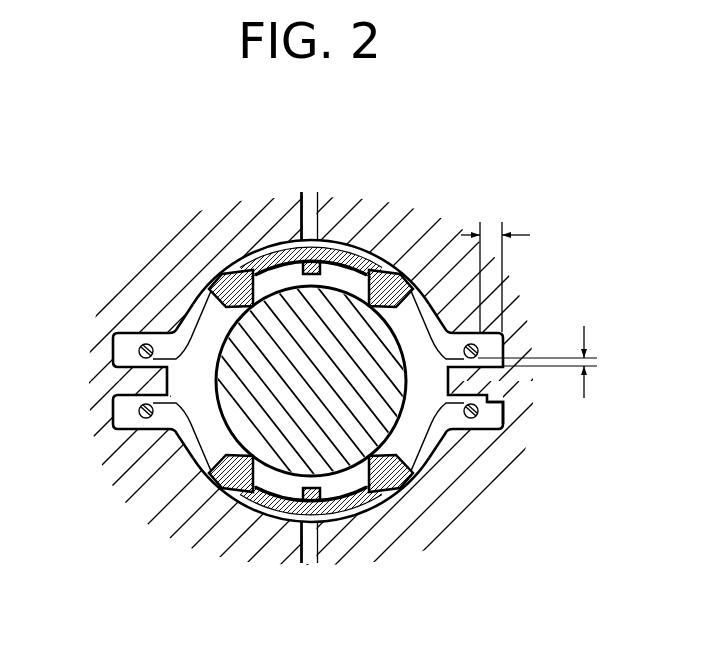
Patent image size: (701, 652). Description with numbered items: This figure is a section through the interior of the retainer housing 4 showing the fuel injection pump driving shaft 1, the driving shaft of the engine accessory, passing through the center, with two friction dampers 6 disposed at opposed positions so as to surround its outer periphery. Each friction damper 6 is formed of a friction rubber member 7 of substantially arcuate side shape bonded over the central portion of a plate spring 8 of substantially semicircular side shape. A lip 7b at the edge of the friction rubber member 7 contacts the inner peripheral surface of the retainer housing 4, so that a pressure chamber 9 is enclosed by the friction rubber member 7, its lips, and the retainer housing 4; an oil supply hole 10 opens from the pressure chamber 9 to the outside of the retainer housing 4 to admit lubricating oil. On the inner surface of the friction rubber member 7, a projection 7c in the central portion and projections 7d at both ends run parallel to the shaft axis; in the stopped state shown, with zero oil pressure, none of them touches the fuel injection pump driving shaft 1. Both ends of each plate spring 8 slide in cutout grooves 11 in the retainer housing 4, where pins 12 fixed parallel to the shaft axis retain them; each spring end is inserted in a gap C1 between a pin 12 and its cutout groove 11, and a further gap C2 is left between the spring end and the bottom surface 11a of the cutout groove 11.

The fuel injection pump driving shaft 1 is at (288, 393).
The retainer housing 4 is at (140, 310).
The friction damper 6 is at (187, 143).
The friction rubber member 7 is at (256, 266).
The lip 7b is at (407, 272).
The projection 7c is at (326, 492).
The projection 7d is at (400, 453).
The plate spring 8 is at (232, 278).
The pressure chamber 9 is at (341, 243).
The oil supply hole 10 is at (302, 194).
The cutout groove 11 is at (504, 400).
The bottom surface 11a is at (494, 426).
The pin 12 is at (143, 413).
The gap C1 is at (597, 362).
The gap C2 is at (488, 228).